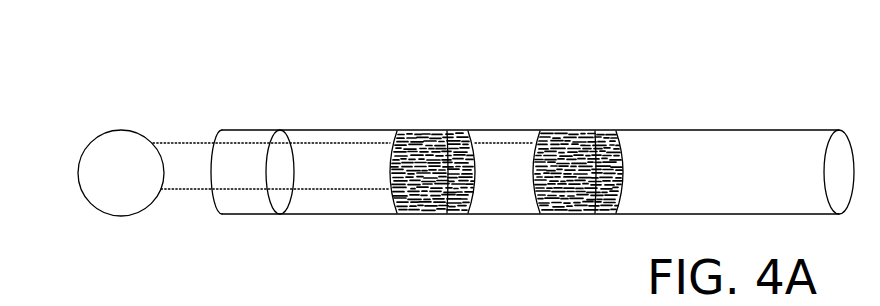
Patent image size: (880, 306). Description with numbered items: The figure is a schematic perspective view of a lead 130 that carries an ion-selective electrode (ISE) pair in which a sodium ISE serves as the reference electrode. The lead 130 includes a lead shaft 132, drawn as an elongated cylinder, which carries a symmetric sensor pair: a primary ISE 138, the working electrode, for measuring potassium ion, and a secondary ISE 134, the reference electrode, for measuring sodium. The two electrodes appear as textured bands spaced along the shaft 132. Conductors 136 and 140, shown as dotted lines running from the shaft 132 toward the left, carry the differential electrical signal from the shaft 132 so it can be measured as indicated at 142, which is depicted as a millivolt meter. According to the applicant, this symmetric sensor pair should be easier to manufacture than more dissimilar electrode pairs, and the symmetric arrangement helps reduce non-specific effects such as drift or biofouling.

The lead 130 is at (696, 89).
The lead shaft 132 is at (790, 130).
The secondary ISE 134 is at (573, 131).
The conductor 136 is at (173, 142).
The primary ISE 138 is at (418, 132).
The conductor 140 is at (178, 190).
The measurement location 142 is at (78, 177).